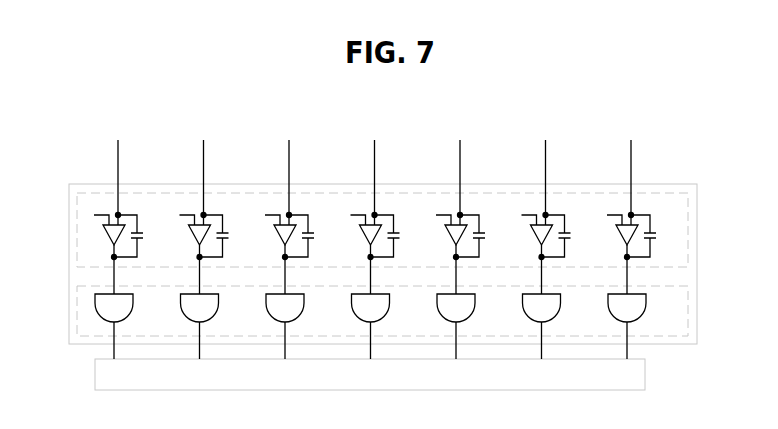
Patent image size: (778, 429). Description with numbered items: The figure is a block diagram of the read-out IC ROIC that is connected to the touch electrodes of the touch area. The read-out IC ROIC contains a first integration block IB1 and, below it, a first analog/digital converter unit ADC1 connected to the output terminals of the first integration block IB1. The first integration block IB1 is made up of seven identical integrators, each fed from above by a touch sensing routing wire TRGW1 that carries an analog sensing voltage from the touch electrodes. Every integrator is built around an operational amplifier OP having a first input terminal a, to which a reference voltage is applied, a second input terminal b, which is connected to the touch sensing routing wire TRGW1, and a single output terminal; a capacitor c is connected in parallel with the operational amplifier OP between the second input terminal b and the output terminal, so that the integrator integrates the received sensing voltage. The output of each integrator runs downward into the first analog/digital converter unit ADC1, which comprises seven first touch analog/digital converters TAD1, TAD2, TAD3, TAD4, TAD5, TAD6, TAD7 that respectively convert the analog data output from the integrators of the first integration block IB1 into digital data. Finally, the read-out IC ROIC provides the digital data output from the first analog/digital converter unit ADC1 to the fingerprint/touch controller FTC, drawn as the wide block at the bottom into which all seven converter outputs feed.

The read-out IC ROIC is at (686, 184).
The first integration block IB1 is at (77, 230).
The first analog/digital converter unit ADC1 is at (77, 312).
The fingerprint/touch controller FTC is at (370, 374).
The touch sensing routing wire TRGW1 is at (373, 174).
The operational amplifier OP is at (361, 235).
The first input terminal a is at (353, 216).
The second input terminal b is at (380, 208).
The capacitor c is at (390, 236).
The first touch analog/digital converter TAD1 is at (130, 308).
The first touch analog/digital converter TAD2 is at (216, 308).
The first touch analog/digital converter TAD3 is at (301, 308).
The first touch analog/digital converter TAD4 is at (387, 308).
The first touch analog/digital converter TAD5 is at (472, 308).
The first touch analog/digital converter TAD6 is at (558, 308).
The first touch analog/digital converter TAD7 is at (643, 308).